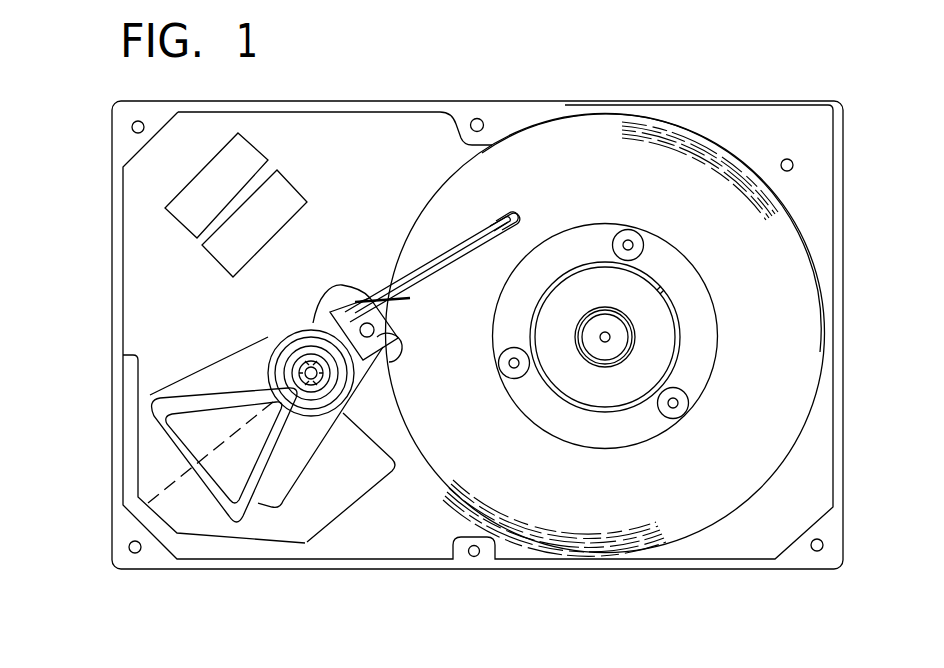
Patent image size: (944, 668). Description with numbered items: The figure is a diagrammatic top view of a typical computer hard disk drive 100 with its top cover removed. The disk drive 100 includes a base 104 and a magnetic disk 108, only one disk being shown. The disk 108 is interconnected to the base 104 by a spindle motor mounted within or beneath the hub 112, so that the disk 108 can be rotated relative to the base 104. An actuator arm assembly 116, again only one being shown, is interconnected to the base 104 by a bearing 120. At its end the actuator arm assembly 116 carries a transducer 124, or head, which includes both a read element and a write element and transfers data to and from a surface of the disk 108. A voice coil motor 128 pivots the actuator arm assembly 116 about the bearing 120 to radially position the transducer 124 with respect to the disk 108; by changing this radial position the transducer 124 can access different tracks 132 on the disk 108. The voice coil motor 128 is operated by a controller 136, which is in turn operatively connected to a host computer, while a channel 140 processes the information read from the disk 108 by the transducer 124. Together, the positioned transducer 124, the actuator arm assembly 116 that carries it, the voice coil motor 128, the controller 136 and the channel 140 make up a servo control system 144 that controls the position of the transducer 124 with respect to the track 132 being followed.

The disk drive 100 is at (710, 88).
The base 104 is at (413, 537).
The magnetic disk 108 is at (622, 520).
The hub 112 is at (615, 328).
The actuator arm assembly 116 is at (460, 243).
The bearing 120 is at (307, 370).
The transducer 124 is at (508, 210).
The voice coil motor 128 is at (158, 422).
The tracks 132 is at (592, 542).
The controller 136 is at (187, 218).
The channel 140 is at (218, 250).
The servo control system 144 is at (357, 252).